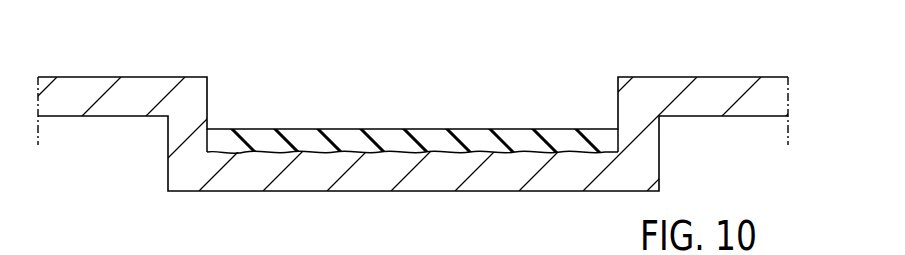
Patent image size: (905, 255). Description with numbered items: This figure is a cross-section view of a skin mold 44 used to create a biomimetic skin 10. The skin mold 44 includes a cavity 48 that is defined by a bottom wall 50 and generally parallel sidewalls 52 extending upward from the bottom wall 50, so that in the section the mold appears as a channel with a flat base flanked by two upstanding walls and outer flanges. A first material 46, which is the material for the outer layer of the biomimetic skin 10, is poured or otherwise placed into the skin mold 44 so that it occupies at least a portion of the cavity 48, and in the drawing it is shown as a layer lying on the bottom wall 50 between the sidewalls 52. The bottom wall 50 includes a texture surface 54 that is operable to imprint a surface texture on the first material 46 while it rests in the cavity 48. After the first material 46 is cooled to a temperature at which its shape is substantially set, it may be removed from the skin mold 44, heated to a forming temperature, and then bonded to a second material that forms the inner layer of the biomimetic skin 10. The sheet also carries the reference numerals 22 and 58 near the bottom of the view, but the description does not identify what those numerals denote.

The biomimetic skin 10 is at (488, 254).
The seal 22 is at (412, 254).
The skin mold 44 is at (642, 58).
The first material 46 is at (476, 147).
The cavity 48 is at (247, 86).
The bottom wall 50 is at (237, 180).
The sidewalls 52 is at (178, 128).
The texture surface 54 is at (407, 150).
The seal contact surface 58 is at (292, 244).